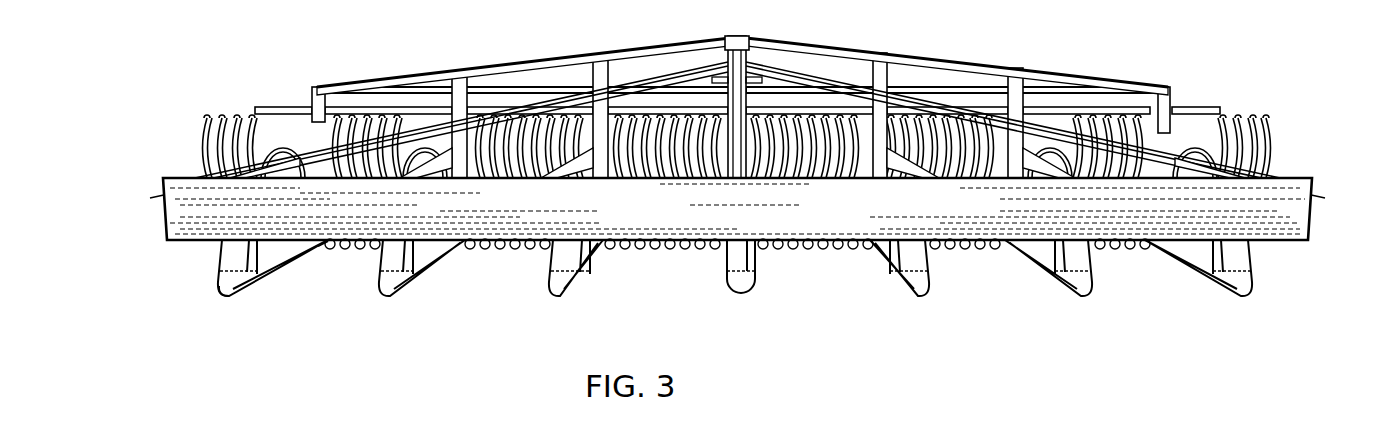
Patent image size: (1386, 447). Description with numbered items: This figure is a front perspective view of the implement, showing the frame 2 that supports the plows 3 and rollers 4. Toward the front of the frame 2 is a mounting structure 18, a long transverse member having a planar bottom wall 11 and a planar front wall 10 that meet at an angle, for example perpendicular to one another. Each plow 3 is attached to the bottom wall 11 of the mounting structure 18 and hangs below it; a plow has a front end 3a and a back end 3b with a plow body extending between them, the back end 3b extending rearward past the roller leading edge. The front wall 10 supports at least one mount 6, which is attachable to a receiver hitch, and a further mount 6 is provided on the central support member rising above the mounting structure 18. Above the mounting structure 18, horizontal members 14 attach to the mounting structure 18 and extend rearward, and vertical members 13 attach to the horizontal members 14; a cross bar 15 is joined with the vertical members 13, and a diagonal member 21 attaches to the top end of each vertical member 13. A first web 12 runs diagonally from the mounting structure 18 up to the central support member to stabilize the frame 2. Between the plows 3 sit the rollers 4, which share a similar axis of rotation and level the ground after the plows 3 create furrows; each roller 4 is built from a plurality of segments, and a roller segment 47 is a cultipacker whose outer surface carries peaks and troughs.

The frame 2 is at (1219, 50).
The plow 3 is at (214, 301).
The plow front end 3a is at (237, 300).
The plow back end 3b is at (325, 250).
The roller 4 is at (229, 103).
The mount 6 is at (727, 62).
The front wall 10 is at (913, 195).
The bottom wall 11 is at (1288, 244).
The first web 12 is at (640, 88).
The vertical member 13 is at (311, 105).
The horizontal member 14 is at (272, 182).
The cross bar 15 is at (371, 100).
The mounting structure 18 is at (1314, 205).
The diagonal member 21 is at (636, 50).
The roller segment 47 is at (1226, 127).